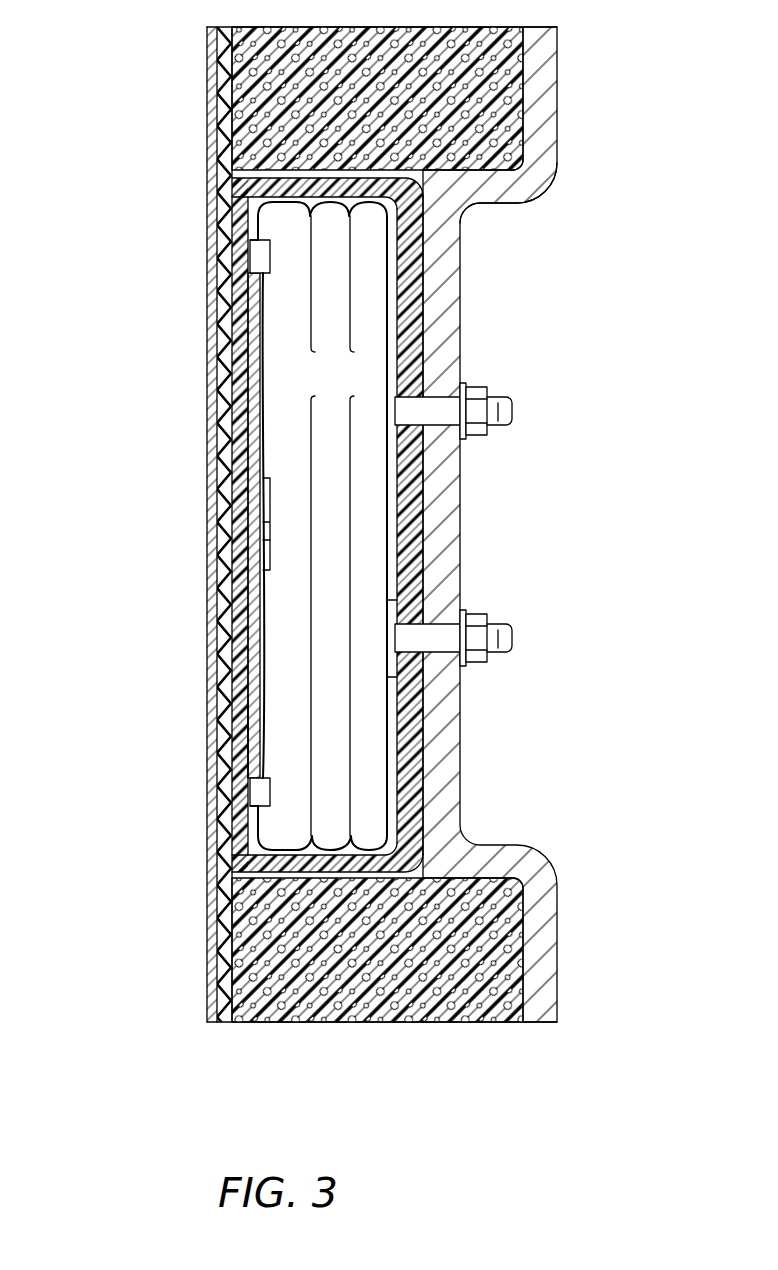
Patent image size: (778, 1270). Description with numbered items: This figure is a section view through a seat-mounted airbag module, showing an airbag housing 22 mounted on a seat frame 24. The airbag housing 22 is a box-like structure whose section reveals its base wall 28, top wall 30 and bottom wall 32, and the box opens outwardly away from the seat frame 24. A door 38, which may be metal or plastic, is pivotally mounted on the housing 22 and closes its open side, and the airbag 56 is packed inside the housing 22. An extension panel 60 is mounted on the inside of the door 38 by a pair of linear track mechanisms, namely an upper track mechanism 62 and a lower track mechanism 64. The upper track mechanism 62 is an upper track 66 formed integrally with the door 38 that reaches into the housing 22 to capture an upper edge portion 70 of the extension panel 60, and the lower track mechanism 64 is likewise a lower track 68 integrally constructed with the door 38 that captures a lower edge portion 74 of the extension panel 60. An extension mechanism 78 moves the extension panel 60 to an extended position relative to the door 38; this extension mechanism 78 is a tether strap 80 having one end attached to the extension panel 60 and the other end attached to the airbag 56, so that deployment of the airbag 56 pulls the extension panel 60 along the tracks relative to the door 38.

The airbag housing 22 is at (407, 317).
The seat frame 24 is at (482, 188).
The base wall 28 is at (407, 543).
The top wall 30 is at (291, 190).
The bottom wall 32 is at (370, 863).
The door 38 is at (238, 488).
The airbag 56 is at (330, 648).
The extension panel 60 is at (254, 453).
The upper track mechanism 62 is at (258, 262).
The lower track mechanism 64 is at (260, 780).
The upper track 66 is at (256, 243).
The lower track 68 is at (257, 797).
The upper edge portion 70 is at (256, 287).
The lower edge portion 74 is at (254, 752).
The extension mechanism 78 is at (268, 540).
The tether strap 80 is at (264, 517).